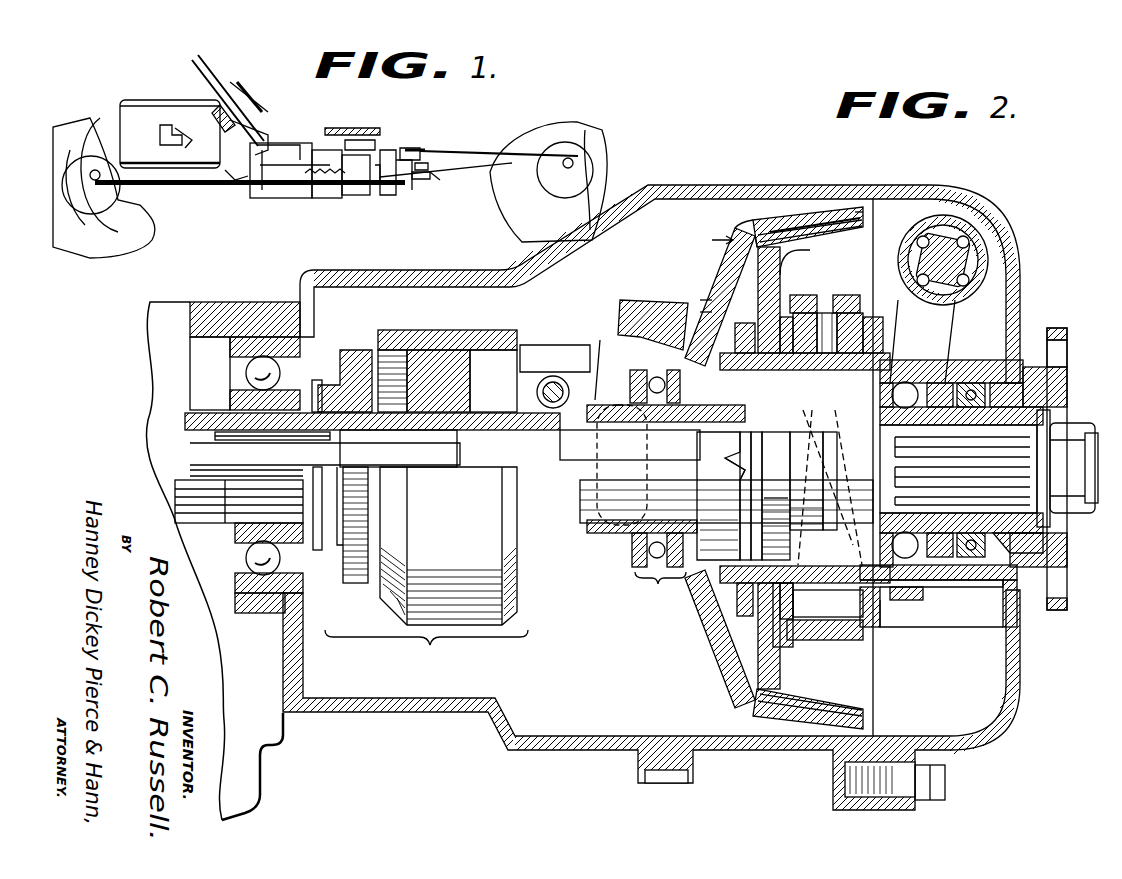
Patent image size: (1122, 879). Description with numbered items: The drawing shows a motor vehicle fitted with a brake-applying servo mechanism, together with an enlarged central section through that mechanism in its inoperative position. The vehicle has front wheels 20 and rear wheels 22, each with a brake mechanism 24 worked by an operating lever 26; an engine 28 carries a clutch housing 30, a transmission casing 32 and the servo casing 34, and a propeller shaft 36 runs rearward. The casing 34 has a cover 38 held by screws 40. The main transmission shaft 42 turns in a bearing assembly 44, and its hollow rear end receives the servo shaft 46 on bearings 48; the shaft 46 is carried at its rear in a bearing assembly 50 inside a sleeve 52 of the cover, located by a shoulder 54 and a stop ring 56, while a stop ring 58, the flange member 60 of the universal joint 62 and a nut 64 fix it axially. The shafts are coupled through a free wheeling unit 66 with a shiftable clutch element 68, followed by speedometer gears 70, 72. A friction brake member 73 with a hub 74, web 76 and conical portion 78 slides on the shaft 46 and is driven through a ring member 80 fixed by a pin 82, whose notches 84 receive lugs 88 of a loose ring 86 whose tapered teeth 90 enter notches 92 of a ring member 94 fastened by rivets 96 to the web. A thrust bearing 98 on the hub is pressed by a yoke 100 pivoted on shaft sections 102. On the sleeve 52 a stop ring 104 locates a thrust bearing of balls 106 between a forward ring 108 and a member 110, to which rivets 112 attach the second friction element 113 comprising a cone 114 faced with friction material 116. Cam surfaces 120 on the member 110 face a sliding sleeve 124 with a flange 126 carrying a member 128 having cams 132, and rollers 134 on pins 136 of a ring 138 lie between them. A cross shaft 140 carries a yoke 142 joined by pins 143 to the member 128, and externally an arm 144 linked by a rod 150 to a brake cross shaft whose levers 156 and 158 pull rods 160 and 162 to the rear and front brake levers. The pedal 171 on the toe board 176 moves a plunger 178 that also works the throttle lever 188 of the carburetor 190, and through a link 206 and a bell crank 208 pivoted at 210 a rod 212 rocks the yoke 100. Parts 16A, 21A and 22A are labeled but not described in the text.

In FIG. 1, the link 16A is at (412, 146).
In FIG. 1, the front wheels 20 is at (138, 245).
In FIG. 1, the bracket 21A is at (340, 128).
In FIG. 1, the rear wheels 22 is at (608, 130).
In FIG. 1, the bracket 22A is at (350, 138).
In FIG. 1, the brake mechanism 24 is at (112, 240).
In FIG. 1, the operating arm or lever 26 is at (96, 170).
In FIG. 1, the engine 28 is at (138, 100).
In FIG. 1, the clutch housing 30 is at (245, 200).
In FIG. 1, the transmission casing 32 is at (312, 200).
In FIG. 2, the transmission casing 32 is at (180, 300).
In FIG. 1, the casing 34 is at (350, 198).
In FIG. 2, the casing 34 is at (710, 186).
In FIG. 1, the propeller shaft 36 is at (445, 178).
In FIG. 2, the cover 38 is at (955, 186).
In FIG. 2, the screws 40 is at (935, 803).
In FIG. 2, the main transmission shaft 42 is at (185, 515).
In FIG. 2, the bearing assembly 44 is at (232, 574).
In FIG. 2, the servo shaft 46 is at (598, 535).
In FIG. 2, the bearings 48 is at (255, 440).
In FIG. 2, the bearing assembly 50 is at (943, 360).
In FIG. 2, the sleeve 52 is at (935, 358).
In FIG. 2, the radial shoulder 54 is at (945, 596).
In FIG. 2, the split spring stop ring 56 is at (905, 596).
In FIG. 2, the split spring stop ring 58 is at (865, 430).
In FIG. 2, the flange member 60 is at (1070, 375).
In FIG. 1, the universal joint 62 is at (390, 148).
In FIG. 2, the nut 64 is at (1080, 420).
In FIG. 2, the free wheeling unit 66 is at (420, 569).
In FIG. 2, the shiftable clutch element 68 is at (358, 345).
In FIG. 2, the speedometer drive gear 70 is at (538, 378).
In FIG. 2, the speedometer drive gear 72 is at (553, 345).
In FIG. 2, the friction brake member 73 is at (708, 240).
In FIG. 2, the hub portion 74 is at (660, 493).
In FIG. 2, the web portion 76 is at (718, 258).
In FIG. 2, the frusto-conically shaped portion 78 is at (750, 232).
In FIG. 2, the ring member 80 is at (776, 496).
In FIG. 2, the pin 82 is at (801, 481).
In FIG. 2, the notches 84 is at (762, 428).
In FIG. 2, the ring member 86 is at (776, 487).
In FIG. 2, the teeth or lugs 88 is at (738, 432).
In FIG. 2, the tapered teeth 90 is at (735, 469).
In FIG. 2, the notch 92 is at (721, 496).
In FIG. 2, the ring member 94 is at (719, 517).
In FIG. 2, the rivets 96 is at (685, 420).
In FIG. 2, the thrust bearing 98 is at (658, 488).
In FIG. 2, the yoke member 100 is at (636, 300).
In FIG. 1, the shaft sections 102 is at (295, 171).
In FIG. 2, the shaft sections 102 is at (600, 370).
In FIG. 2, the split spring stop ring 104 is at (733, 338).
In FIG. 2, the balls 106 is at (735, 300).
In FIG. 2, the forward ring 108 is at (740, 318).
In FIG. 2, the member 110 is at (808, 376).
In FIG. 2, the rivets 112 is at (780, 300).
In FIG. 2, the second friction element 113 is at (790, 232).
In FIG. 2, the cone element 114 is at (800, 262).
In FIG. 2, the friction material 116 is at (866, 220).
In FIG. 2, the cam surfaces 120 is at (818, 550).
In FIG. 2, the sleeve 124 is at (868, 395).
In FIG. 2, the annular flange 126 is at (922, 355).
In FIG. 2, the member 128 is at (885, 615).
In FIG. 1, the cams or teeth 132 is at (430, 175).
In FIG. 1, the rollers 134 is at (428, 166).
In FIG. 2, the rollers 134 is at (852, 300).
In FIG. 2, the radially disposed pins 136 is at (825, 333).
In FIG. 2, the ring member 138 is at (825, 292).
In FIG. 1, the cross shaft 140 is at (325, 174).
In FIG. 2, the cross shaft 140 is at (960, 248).
In FIG. 2, the yoke member 142 is at (978, 265).
In FIG. 2, the pins 143 is at (890, 463).
In FIG. 1, the depending arm 144 is at (385, 208).
In FIG. 1, the rod 150 is at (383, 190).
In FIG. 1, the upwardly extending arm or lever 156 is at (425, 150).
In FIG. 1, the downwardly extending arm or lever 158 is at (435, 190).
In FIG. 1, the rod 160 is at (478, 152).
In FIG. 1, the rods 162 is at (268, 205).
In FIG. 1, the pedal member 171 is at (255, 92).
In FIG. 1, the toe board 176 is at (200, 70).
In FIG. 1, the plunger 178 is at (212, 110).
In FIG. 1, the throttle control lever 188 is at (195, 148).
In FIG. 1, the engine carburetor 190 is at (155, 133).
In FIG. 1, the link 206 is at (270, 117).
In FIG. 1, the bell crank 208 is at (226, 172).
In FIG. 1, the pivot 210 is at (220, 184).
In FIG. 1, the rod 212 is at (279, 155).